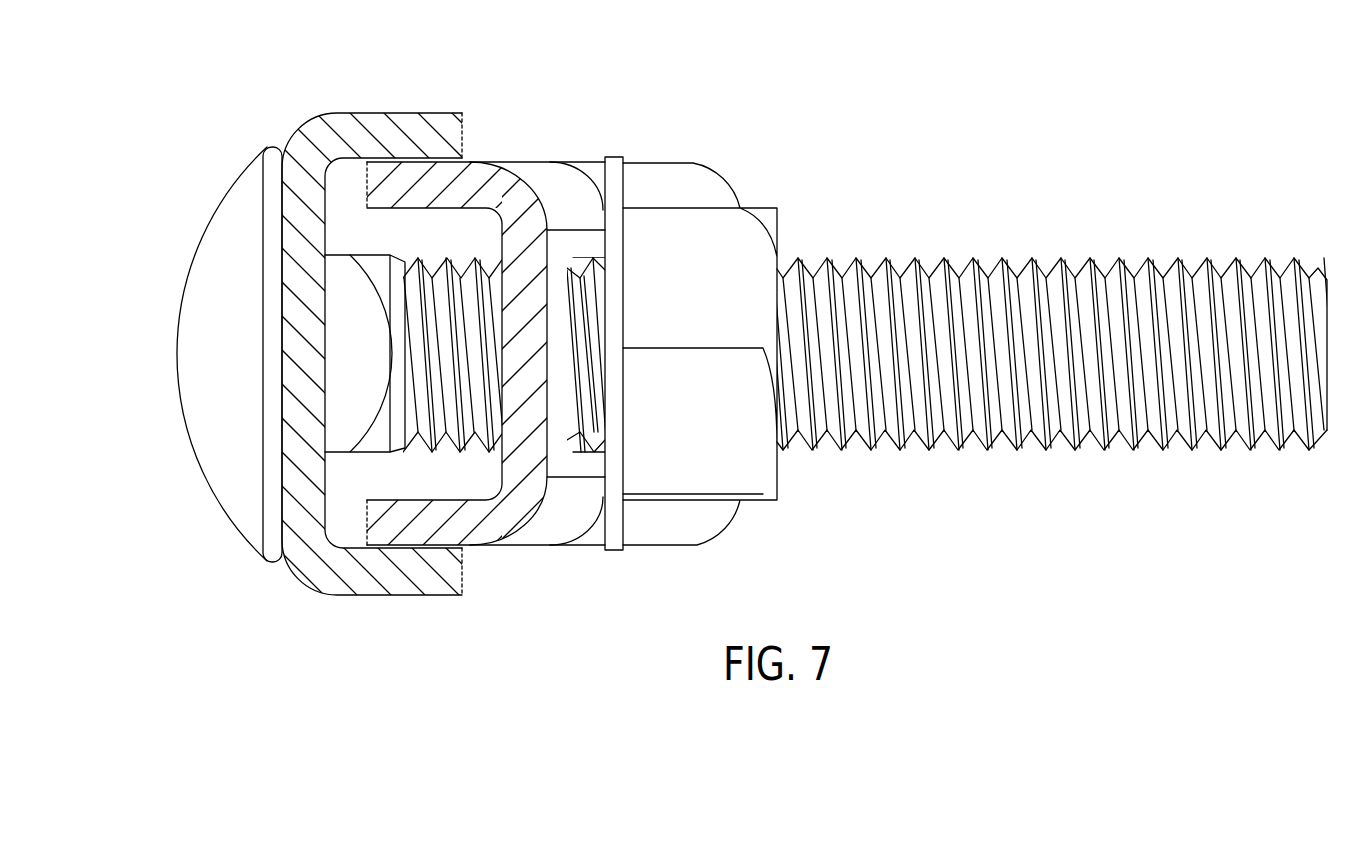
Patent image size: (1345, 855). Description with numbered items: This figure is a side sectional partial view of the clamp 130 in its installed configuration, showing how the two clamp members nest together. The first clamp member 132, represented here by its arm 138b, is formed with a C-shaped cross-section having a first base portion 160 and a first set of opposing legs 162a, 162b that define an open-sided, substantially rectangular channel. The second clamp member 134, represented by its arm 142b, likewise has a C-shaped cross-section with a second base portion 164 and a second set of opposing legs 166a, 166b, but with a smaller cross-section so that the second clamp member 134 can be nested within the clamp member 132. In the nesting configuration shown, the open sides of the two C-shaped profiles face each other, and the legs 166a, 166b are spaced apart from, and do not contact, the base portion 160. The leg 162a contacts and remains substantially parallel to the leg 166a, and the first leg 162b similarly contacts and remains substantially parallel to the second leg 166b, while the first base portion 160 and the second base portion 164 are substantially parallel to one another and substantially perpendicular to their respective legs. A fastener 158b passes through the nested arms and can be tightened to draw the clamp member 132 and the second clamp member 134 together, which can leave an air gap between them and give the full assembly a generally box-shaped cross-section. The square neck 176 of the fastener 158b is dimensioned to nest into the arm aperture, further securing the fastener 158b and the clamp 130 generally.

The clamp 130 is at (258, 88).
The first clamp member 132 is at (295, 482).
The second clamp member 134 is at (527, 407).
The arm 138b is at (315, 562).
The arm 142b is at (520, 193).
The fastener 158b is at (179, 345).
The first base portion 160 is at (303, 220).
The leg 162a is at (387, 125).
The leg 162b is at (377, 597).
The second base portion 164 is at (528, 487).
The leg 166a is at (445, 180).
The leg 166b is at (445, 517).
The neck 176 is at (355, 315).